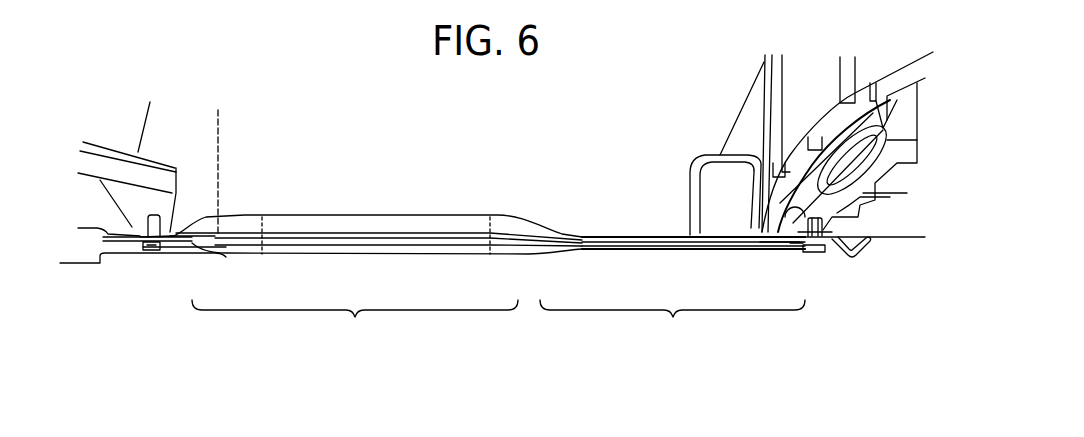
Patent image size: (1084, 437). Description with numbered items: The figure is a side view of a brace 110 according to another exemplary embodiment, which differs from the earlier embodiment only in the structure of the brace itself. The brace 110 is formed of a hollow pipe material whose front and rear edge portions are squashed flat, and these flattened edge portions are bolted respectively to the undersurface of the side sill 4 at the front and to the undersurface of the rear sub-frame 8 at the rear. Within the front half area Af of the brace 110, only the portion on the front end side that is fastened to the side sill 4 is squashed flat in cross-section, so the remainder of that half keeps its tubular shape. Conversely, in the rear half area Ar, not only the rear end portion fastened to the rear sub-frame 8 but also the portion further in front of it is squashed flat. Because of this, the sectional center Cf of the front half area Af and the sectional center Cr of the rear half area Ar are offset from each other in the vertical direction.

The brace 110 is at (514, 183).
The side sill 4 is at (123, 226).
The rear sub-frame 8 is at (799, 254).
The sectional center of the front half area Cf is at (362, 230).
The sectional center of the rear half area Cr is at (667, 243).
The front half area Af is at (355, 326).
The rear half area Ar is at (672, 326).